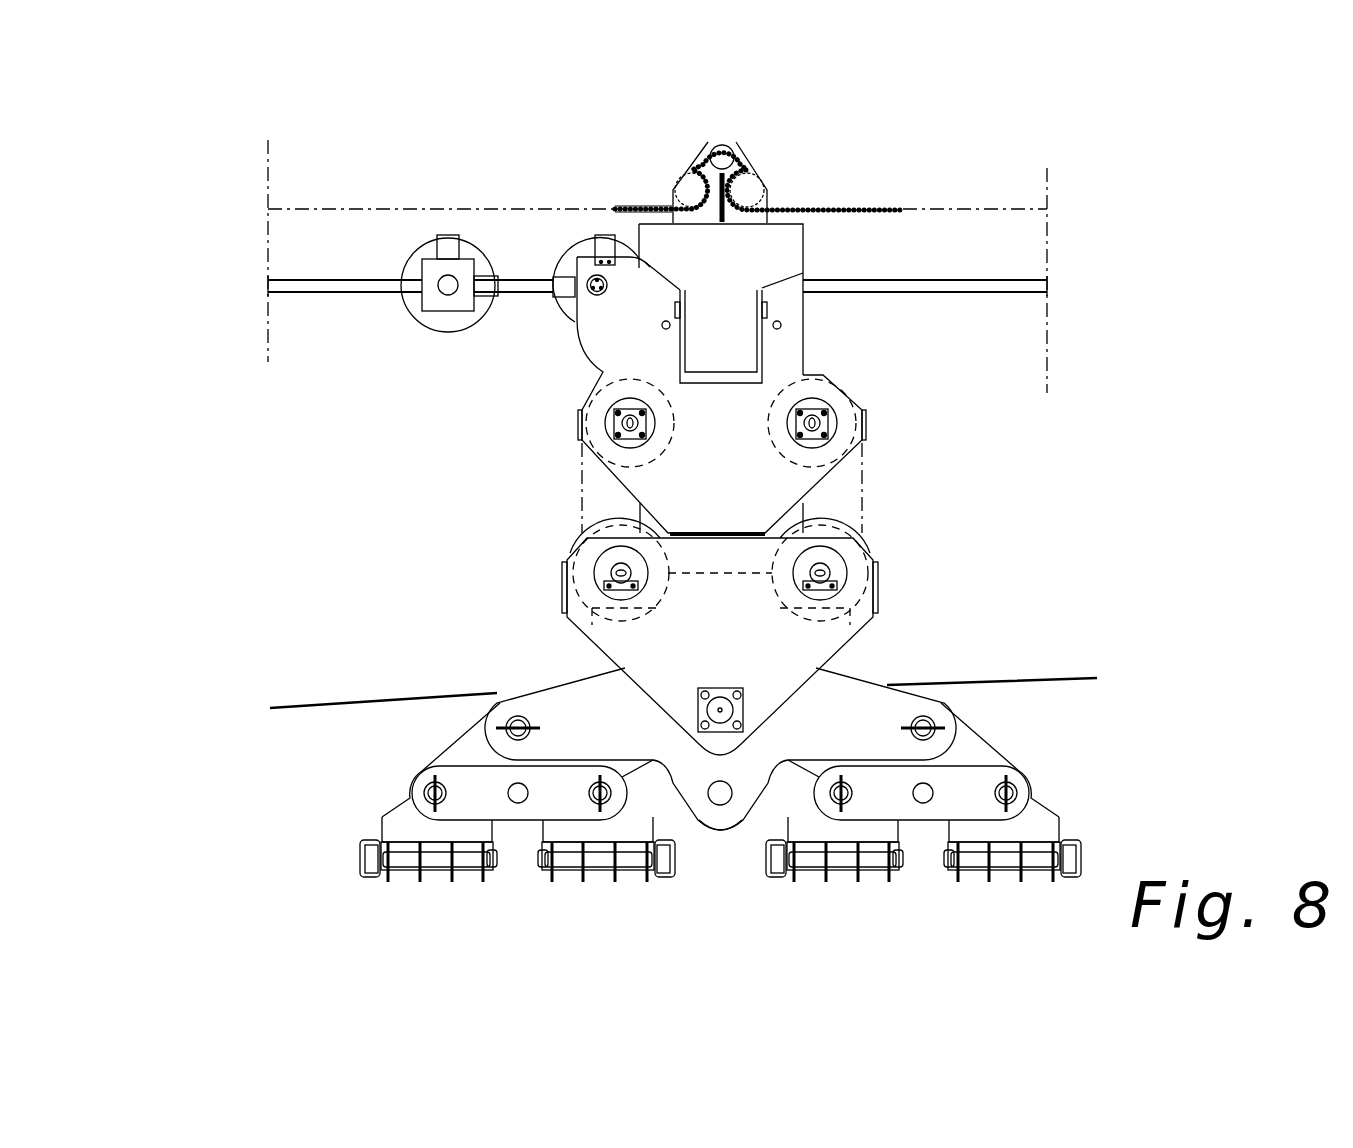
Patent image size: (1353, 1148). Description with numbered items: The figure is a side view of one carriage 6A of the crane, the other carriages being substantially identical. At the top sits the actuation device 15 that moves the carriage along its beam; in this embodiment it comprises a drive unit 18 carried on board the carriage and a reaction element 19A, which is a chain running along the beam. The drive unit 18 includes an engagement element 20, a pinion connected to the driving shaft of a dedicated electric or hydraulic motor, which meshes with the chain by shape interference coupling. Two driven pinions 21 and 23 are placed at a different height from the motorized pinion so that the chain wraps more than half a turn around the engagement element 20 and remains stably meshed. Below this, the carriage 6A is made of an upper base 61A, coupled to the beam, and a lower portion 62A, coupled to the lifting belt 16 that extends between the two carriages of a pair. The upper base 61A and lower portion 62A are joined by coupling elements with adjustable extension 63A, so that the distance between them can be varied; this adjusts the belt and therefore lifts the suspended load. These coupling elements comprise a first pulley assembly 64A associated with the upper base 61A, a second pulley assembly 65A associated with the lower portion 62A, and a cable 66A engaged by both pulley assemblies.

The actuation device 15 is at (710, 132).
The drive unit 18 is at (722, 146).
The reaction element 19A is at (620, 208).
The engagement element 20 is at (742, 150).
The driven pinion 21 is at (762, 180).
The driven pinion 23 is at (690, 192).
The carriage 6A is at (711, 506).
The upper base 61A is at (872, 428).
The lower portion 62A is at (892, 607).
The coupling elements with adjustable extension 63A is at (575, 493).
The cable 66A is at (866, 493).
The first pulley assembly 64A is at (583, 390).
The second pulley assembly 65A is at (555, 578).
The lifting belt 16 is at (333, 874).